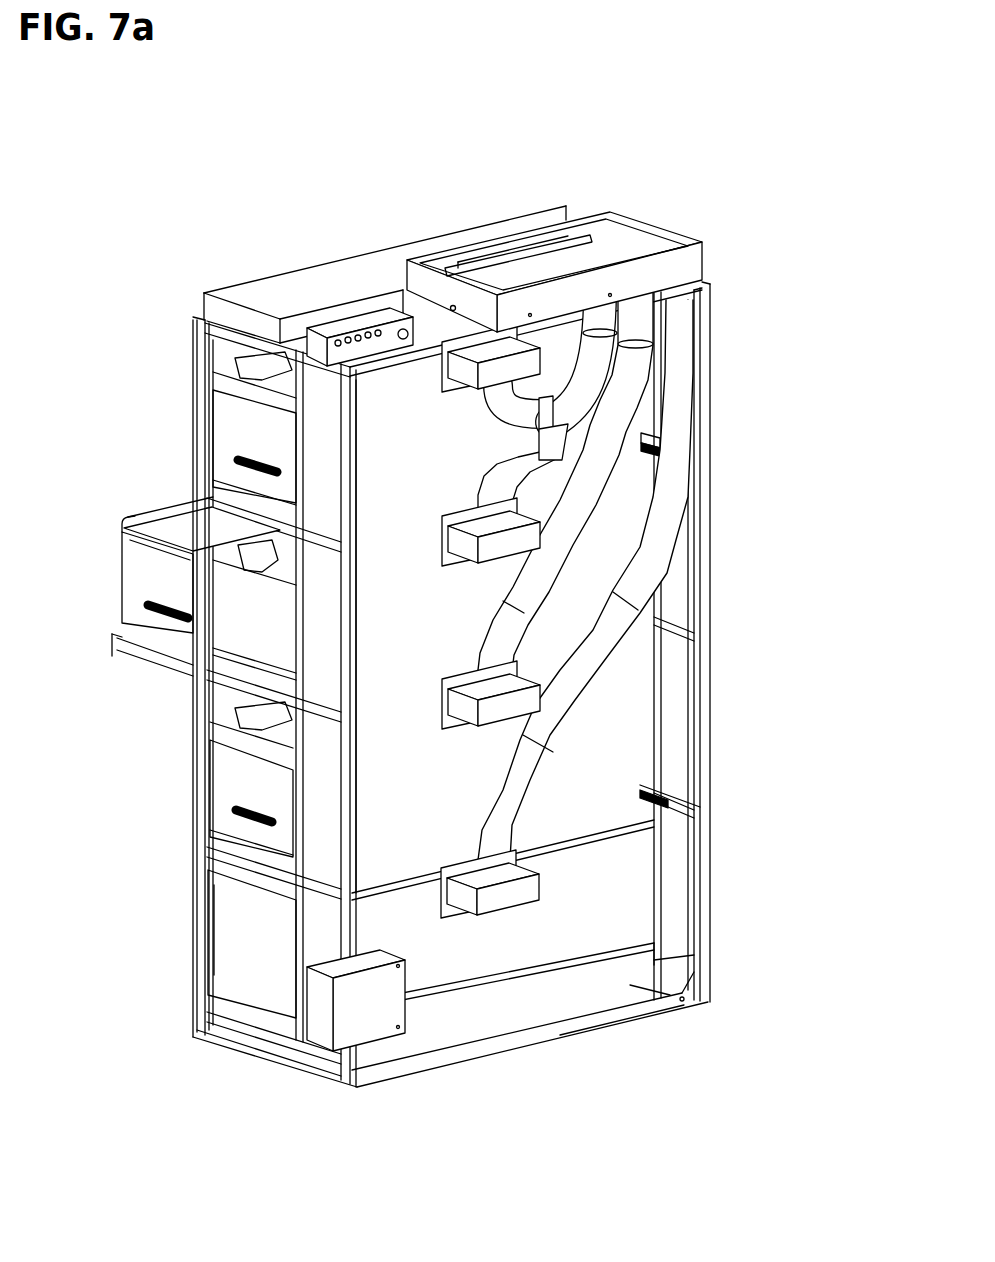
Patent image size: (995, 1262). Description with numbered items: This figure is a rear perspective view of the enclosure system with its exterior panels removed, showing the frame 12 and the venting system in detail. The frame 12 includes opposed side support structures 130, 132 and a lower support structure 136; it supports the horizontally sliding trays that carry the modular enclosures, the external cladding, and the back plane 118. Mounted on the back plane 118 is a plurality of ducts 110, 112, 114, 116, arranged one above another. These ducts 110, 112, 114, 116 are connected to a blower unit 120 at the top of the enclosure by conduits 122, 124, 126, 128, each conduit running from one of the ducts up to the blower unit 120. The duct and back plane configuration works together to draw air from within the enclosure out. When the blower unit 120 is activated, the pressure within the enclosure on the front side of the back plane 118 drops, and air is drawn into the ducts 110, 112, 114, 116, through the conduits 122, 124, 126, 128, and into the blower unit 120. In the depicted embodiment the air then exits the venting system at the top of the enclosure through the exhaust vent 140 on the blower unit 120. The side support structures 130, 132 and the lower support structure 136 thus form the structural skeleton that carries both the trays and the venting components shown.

The frame 12 is at (726, 820).
The duct 110 is at (452, 380).
The duct 112 is at (447, 541).
The duct 114 is at (445, 701).
The duct 116 is at (437, 900).
The back plane 118 is at (618, 766).
The blower unit 120 is at (567, 234).
The conduit 122 is at (582, 377).
The conduit 124 is at (640, 320).
The conduit 126 is at (600, 455).
The conduit 128 is at (660, 525).
The side support structure 130 is at (190, 862).
The side support structure 132 is at (711, 698).
The lower support structure 136 is at (636, 1010).
The exhaust vent 140 is at (600, 258).